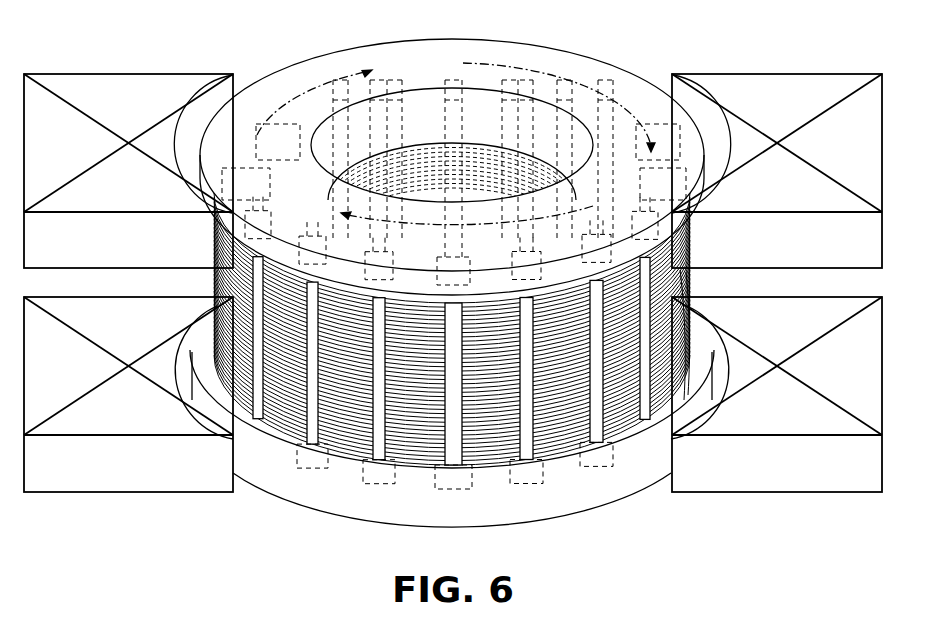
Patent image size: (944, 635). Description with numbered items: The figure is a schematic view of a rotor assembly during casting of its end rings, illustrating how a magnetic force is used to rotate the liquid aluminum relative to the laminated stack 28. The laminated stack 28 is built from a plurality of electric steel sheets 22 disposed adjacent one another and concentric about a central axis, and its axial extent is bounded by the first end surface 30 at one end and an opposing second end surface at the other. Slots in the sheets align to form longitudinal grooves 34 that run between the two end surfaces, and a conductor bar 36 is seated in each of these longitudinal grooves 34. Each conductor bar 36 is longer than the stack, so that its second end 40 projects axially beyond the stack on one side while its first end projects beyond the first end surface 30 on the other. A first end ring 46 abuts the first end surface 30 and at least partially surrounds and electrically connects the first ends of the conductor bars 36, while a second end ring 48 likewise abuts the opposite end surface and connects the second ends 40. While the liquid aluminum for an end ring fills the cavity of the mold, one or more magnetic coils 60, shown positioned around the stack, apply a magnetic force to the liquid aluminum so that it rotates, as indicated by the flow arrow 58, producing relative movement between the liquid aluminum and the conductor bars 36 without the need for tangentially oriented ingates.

The electric steel sheets 22 is at (567, 445).
The laminated stack 28 is at (282, 401).
The first end surface 30 is at (636, 428).
The longitudinal grooves 34 is at (375, 440).
The conductor bars 36 is at (448, 440).
The second end 40 is at (692, 283).
The first end ring 46 is at (513, 507).
The second end ring 48 is at (287, 86).
The flow arrow 58 is at (338, 78).
The magnetic coils 60 is at (133, 250).